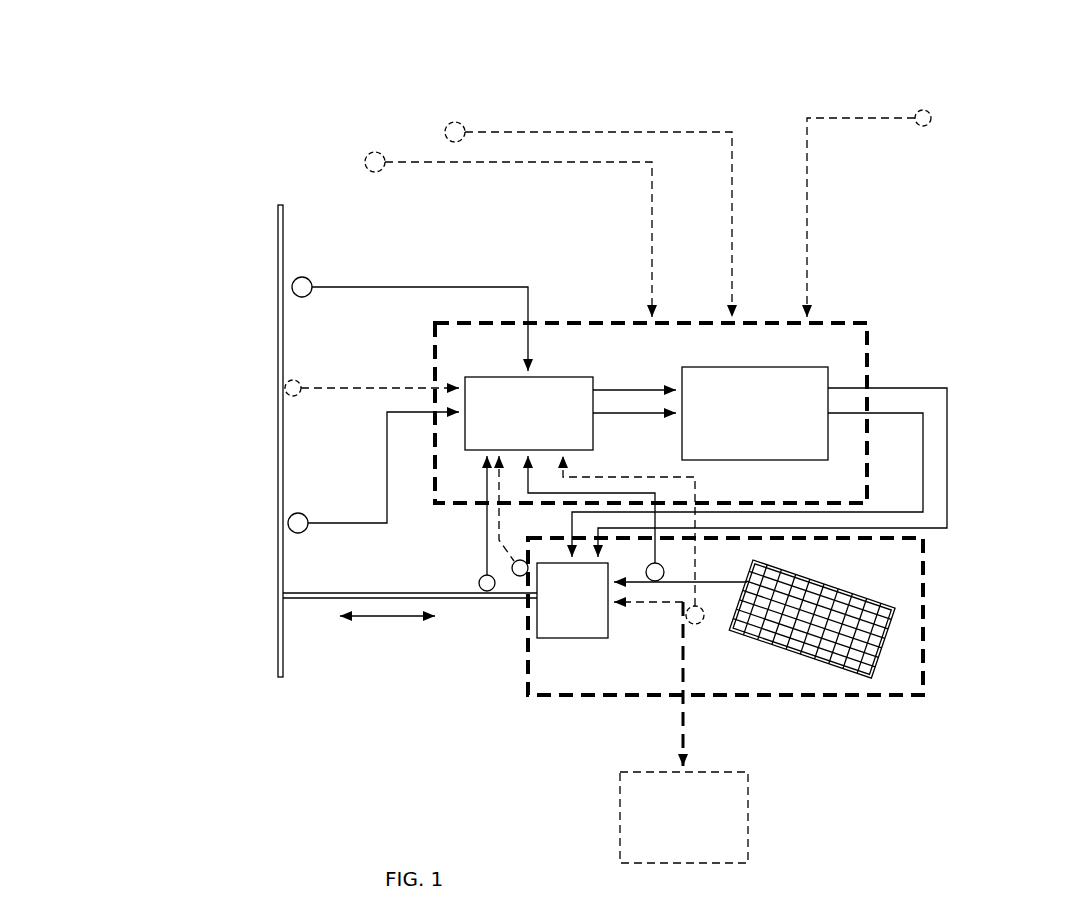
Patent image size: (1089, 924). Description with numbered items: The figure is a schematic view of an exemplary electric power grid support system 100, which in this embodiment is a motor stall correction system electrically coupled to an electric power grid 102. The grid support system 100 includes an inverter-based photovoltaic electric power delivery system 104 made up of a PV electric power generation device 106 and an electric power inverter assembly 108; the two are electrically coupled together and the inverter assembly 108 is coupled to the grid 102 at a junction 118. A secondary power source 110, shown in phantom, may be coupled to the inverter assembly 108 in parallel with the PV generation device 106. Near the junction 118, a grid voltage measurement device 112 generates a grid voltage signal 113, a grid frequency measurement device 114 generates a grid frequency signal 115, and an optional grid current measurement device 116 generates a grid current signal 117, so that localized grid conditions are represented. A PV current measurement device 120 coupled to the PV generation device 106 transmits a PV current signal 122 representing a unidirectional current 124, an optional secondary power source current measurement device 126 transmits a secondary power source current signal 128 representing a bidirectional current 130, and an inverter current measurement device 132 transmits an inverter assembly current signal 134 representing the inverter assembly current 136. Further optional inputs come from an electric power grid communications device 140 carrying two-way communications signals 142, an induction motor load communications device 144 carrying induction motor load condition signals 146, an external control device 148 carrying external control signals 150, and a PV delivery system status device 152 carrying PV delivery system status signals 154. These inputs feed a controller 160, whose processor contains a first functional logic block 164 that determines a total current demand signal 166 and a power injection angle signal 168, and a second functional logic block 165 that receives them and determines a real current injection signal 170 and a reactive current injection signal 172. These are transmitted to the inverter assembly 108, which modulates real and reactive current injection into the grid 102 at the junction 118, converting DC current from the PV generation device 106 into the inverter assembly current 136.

The electric power grid support system 100 is at (1017, 223).
The electric power grid 102 is at (230, 250).
The photovoltaic electric power delivery system 104 is at (815, 702).
The photovoltaic electric power generation device 106 is at (827, 583).
The electric power inverter assembly 108 is at (572, 643).
The secondary power source 110 is at (684, 817).
The grid voltage measurement device 112 is at (290, 530).
The grid voltage signal 113 is at (332, 525).
The grid frequency measurement device 114 is at (293, 295).
The grid frequency signal 115 is at (425, 285).
The grid current measurement device 116 is at (288, 396).
The grid current signal 117 is at (368, 392).
The junction 118 is at (283, 598).
The PV current measurement device 120 is at (664, 572).
The PV current signal 122 is at (528, 497).
The unidirectional current 124 is at (713, 582).
The secondary power source current measurement device 126 is at (697, 624).
The secondary power source current signal 128 is at (700, 481).
The bidirectional current 130 is at (653, 604).
The inverter current measurement device 132 is at (483, 592).
The inverter assembly current signal 134 is at (487, 550).
The inverter assembly current 136 is at (390, 623).
The electric power grid communications device 140 is at (368, 153).
The two-way communications signals 142 is at (507, 164).
The induction motor load communications device 144 is at (930, 112).
The induction motor load condition signals 146 is at (807, 212).
The external control device 148 is at (448, 123).
The external control signals 150 is at (734, 132).
The PV delivery system status device 152 is at (515, 577).
The PV delivery system status signals 154 is at (493, 486).
The controller 160 is at (864, 300).
The first functional logic block 164 is at (529, 413).
The second functional logic block 165 is at (755, 413).
The total current demand signal 166 is at (648, 386).
The power injection angle signal 168 is at (648, 416).
The real current injection signal 170 is at (947, 422).
The reactive current injection signal 172 is at (947, 470).